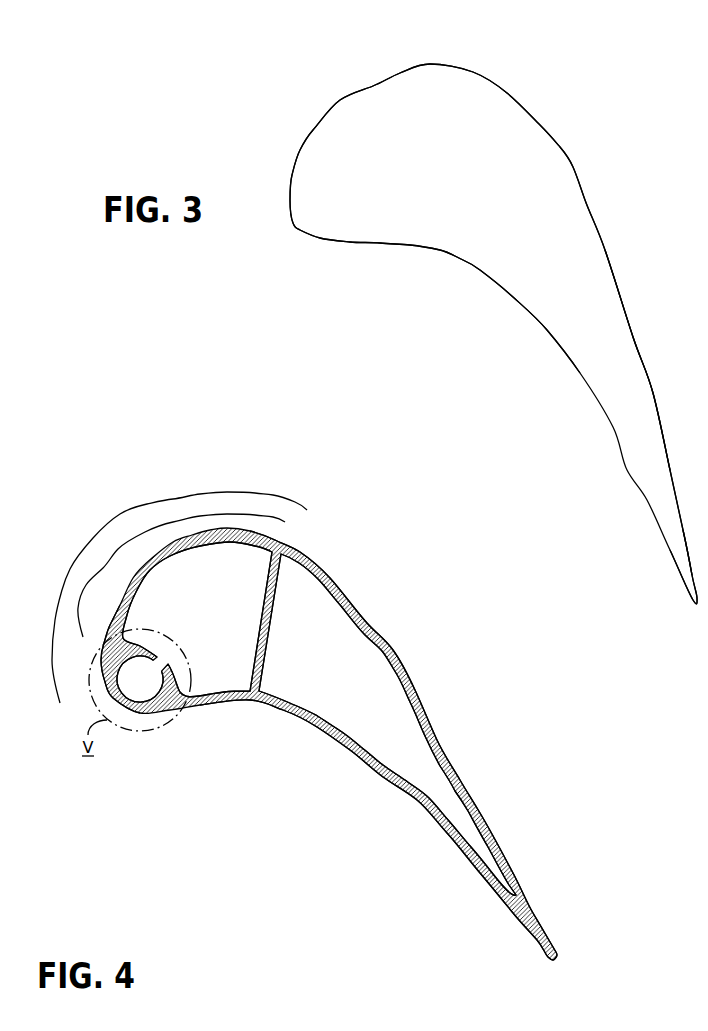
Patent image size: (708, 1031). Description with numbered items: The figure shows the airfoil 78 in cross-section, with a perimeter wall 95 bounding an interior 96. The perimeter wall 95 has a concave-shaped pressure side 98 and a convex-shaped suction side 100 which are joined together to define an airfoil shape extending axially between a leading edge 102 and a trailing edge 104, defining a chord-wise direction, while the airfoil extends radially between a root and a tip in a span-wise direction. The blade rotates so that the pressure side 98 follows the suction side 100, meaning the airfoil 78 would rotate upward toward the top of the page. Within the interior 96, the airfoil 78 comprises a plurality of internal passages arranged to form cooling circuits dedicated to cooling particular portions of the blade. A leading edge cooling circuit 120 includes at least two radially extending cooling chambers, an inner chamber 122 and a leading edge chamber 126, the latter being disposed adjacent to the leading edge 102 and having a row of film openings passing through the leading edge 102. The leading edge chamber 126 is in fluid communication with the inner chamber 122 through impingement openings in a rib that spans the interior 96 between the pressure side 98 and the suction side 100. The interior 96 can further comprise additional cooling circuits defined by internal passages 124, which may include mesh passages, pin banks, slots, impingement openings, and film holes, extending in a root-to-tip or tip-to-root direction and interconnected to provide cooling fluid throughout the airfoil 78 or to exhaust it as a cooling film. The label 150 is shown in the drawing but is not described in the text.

In FIG. 3, the airfoil 78 is at (326, 93).
In FIG. 4, the airfoil 78 is at (430, 640).
In FIG. 3, the perimeter wall 95 is at (635, 338).
In FIG. 3, the interior 96 is at (433, 170).
In FIG. 3, the pressure side 98 is at (493, 277).
In FIG. 4, the pressure side 98 is at (350, 737).
In FIG. 3, the suction side 100 is at (558, 148).
In FIG. 4, the suction side 100 is at (390, 647).
In FIG. 3, the leading edge 102 is at (295, 222).
In FIG. 4, the leading edge 102 is at (125, 712).
In FIG. 3, the trailing edge 104 is at (695, 602).
In FIG. 4, the trailing edge 104 is at (554, 964).
In FIG. 4, the leading edge cooling circuit 120 is at (121, 513).
In FIG. 4, the inner chamber 122 is at (213, 612).
In FIG. 4, the internal passages 124 is at (328, 670).
In FIG. 4, the leading edge chamber 126 is at (136, 694).
In FIG. 4, the airfoil wall structure 150 is at (380, 541).